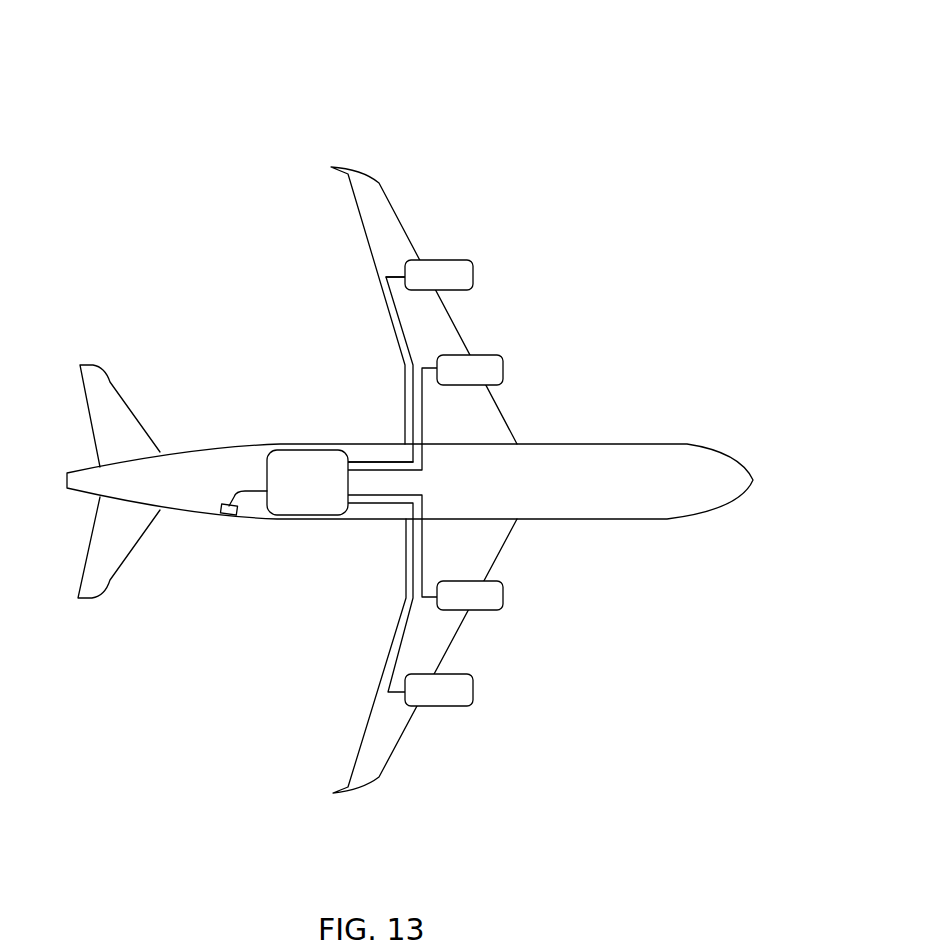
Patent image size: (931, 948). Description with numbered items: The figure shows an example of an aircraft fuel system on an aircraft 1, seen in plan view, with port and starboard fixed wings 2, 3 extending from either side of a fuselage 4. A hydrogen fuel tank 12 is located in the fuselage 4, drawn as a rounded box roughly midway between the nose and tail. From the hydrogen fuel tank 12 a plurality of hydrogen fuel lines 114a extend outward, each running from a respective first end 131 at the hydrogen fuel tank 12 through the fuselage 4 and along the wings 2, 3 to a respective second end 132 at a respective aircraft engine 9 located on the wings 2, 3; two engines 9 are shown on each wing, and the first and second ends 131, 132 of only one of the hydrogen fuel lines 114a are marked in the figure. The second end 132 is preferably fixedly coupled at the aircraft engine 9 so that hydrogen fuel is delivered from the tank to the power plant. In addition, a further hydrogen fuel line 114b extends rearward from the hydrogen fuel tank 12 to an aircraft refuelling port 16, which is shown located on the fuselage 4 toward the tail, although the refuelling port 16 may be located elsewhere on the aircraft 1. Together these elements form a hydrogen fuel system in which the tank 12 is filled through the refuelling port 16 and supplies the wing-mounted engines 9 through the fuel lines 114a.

The aircraft 1 is at (255, 120).
The port fixed wing 2 is at (393, 252).
The starboard fixed wing 3 is at (428, 622).
The fuselage 4 is at (627, 498).
The engines 9 is at (460, 273).
The hydrogen fuel tank 12 is at (300, 497).
The aircraft refuelling port 16 is at (227, 514).
The hydrogen fuel lines 114a is at (397, 320).
The hydrogen fuel line 114b is at (233, 487).
The first end 131 is at (349, 455).
The second end 132 is at (402, 269).